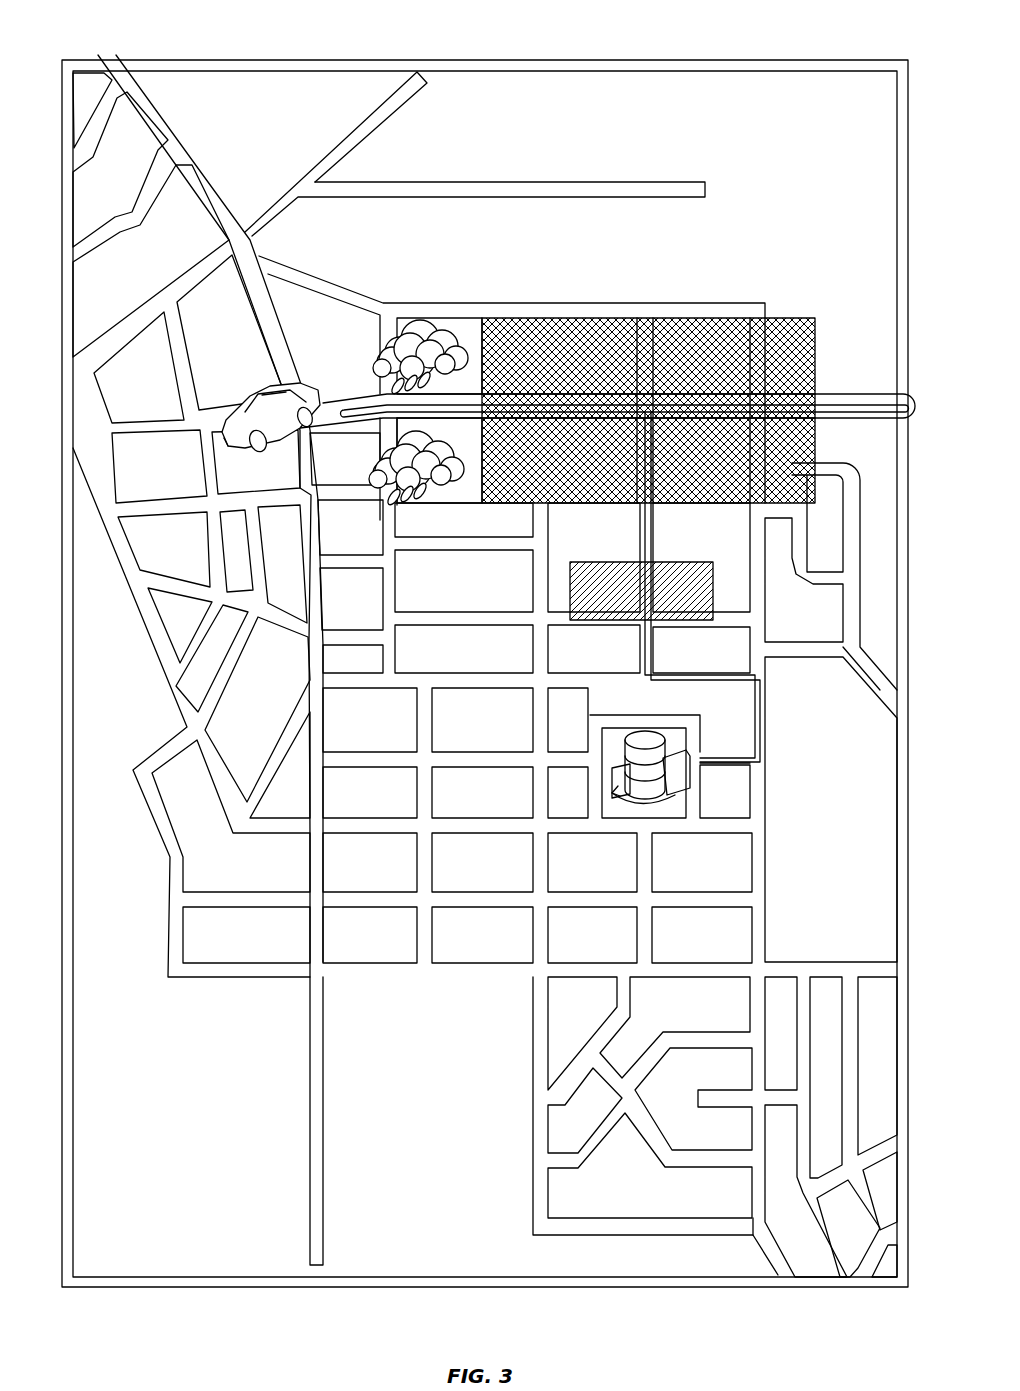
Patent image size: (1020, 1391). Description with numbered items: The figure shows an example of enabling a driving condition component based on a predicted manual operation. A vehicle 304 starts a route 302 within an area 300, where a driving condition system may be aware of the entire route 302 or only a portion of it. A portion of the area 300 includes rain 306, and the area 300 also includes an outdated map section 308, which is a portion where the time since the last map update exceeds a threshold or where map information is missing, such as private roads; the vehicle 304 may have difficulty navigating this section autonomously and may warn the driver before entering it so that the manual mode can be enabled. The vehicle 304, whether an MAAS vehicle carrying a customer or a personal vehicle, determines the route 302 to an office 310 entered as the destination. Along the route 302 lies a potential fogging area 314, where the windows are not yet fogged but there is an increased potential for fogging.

The area 300 is at (718, 69).
The route 302 is at (653, 533).
The vehicle 304 is at (307, 381).
The rain 306 is at (428, 322).
The outdated map section 308 is at (632, 318).
The office 310 is at (612, 797).
The potential fogging area 314 is at (715, 578).